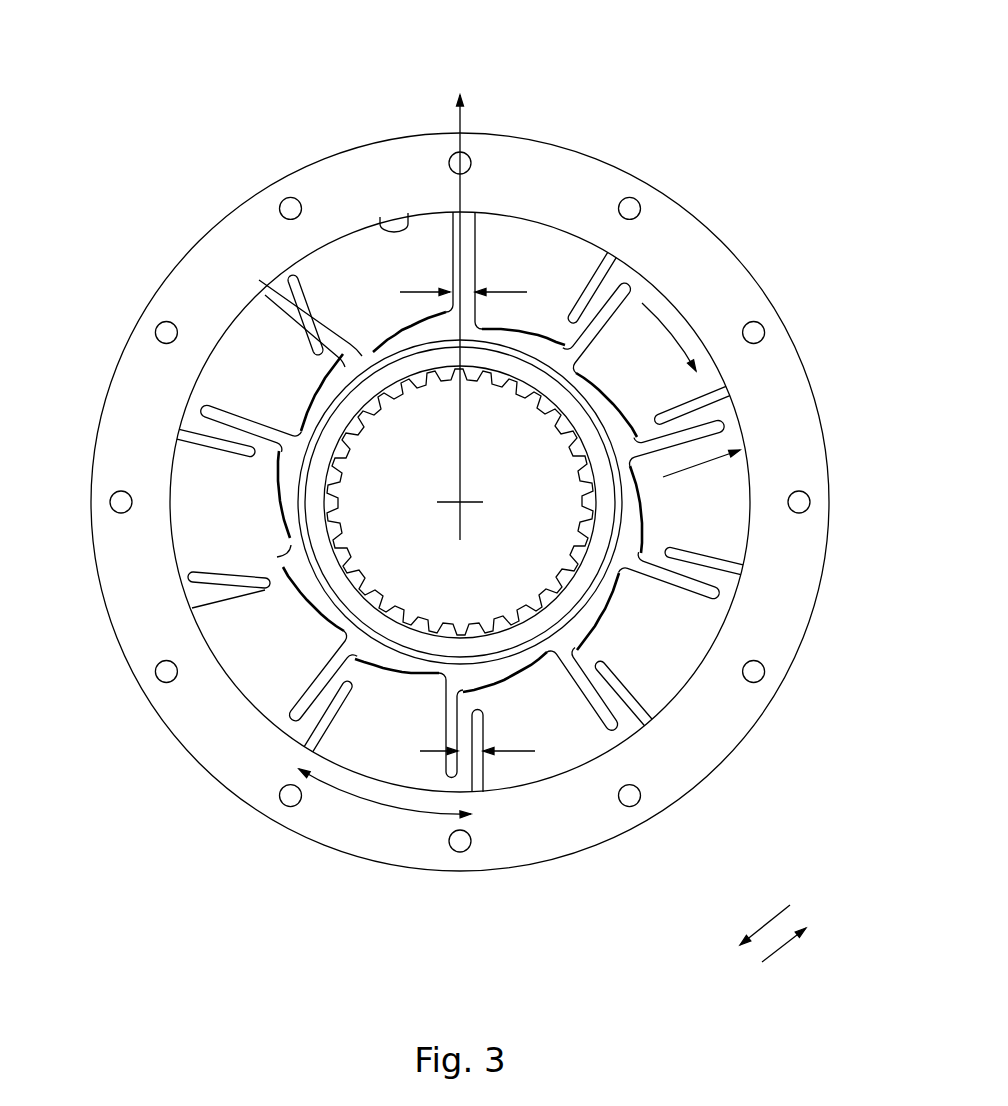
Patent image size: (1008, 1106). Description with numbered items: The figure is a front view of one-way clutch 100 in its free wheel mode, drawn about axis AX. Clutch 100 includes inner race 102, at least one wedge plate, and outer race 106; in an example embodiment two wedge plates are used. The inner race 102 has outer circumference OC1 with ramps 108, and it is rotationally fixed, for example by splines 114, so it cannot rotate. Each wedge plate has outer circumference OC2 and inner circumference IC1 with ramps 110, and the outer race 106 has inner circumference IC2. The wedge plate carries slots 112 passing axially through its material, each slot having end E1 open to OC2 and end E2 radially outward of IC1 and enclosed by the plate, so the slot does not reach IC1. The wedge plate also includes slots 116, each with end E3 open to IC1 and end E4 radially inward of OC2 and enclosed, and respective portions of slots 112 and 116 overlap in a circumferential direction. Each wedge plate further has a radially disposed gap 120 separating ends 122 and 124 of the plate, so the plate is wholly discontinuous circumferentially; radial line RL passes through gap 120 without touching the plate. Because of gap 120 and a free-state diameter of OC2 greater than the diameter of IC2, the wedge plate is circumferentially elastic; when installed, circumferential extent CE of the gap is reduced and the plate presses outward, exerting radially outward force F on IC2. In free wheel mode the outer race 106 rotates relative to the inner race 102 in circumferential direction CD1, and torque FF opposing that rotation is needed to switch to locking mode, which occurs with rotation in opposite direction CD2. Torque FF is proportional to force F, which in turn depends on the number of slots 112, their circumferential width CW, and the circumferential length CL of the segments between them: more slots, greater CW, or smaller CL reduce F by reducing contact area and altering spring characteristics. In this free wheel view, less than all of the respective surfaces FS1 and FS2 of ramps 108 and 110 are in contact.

The one-way clutch 100 is at (732, 82).
The inner race 102 is at (592, 630).
The outer race 106 is at (690, 190).
The ramps 108 is at (587, 573).
The ramps 110 is at (600, 590).
The slots 112 is at (232, 595).
The splines 114 is at (383, 688).
The slots 116 is at (640, 570).
The gap 120 is at (468, 213).
The end 122 is at (452, 212).
The end 124 is at (476, 258).
The axis AX is at (458, 506).
The radial line RL is at (468, 102).
The circumferential extent CE is at (400, 288).
The circumferential length CL is at (326, 793).
The circumferential width CW is at (515, 752).
The circumferential direction CD1 is at (785, 945).
The circumferential direction CD2 is at (765, 925).
The end E1 is at (192, 608).
The end E2 is at (263, 590).
The end E3 is at (627, 583).
The end E4 is at (677, 585).
The radially outward force F is at (700, 466).
The torque FF is at (665, 322).
The surfaces FS1 is at (250, 495).
The surfaces FS2 is at (197, 384).
The inner circumference IC1 is at (300, 305).
The inner circumference IC2 is at (345, 245).
The outer circumference OC1 is at (317, 380).
The outer circumference OC2 is at (380, 219).